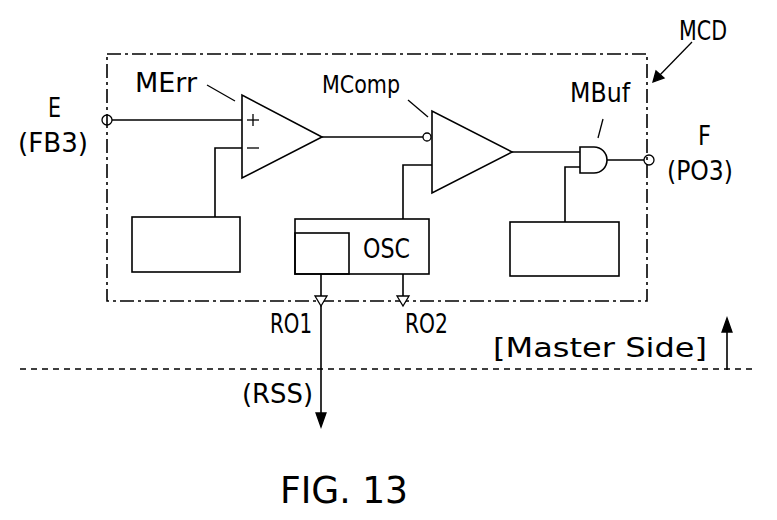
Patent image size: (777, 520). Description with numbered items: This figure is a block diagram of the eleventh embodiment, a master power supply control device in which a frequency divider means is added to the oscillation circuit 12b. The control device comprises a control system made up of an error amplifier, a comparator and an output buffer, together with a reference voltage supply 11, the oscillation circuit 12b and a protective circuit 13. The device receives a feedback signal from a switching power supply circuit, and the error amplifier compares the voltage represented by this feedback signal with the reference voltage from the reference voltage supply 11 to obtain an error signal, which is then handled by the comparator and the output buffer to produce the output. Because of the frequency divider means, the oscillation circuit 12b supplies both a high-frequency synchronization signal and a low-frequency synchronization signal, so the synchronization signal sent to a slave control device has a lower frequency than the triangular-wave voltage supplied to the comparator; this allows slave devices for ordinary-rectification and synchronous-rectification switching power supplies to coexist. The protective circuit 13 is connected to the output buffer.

The reference voltage supply 11 is at (150, 212).
The oscillation circuit 12b is at (332, 217).
The protective circuit 13 is at (507, 246).